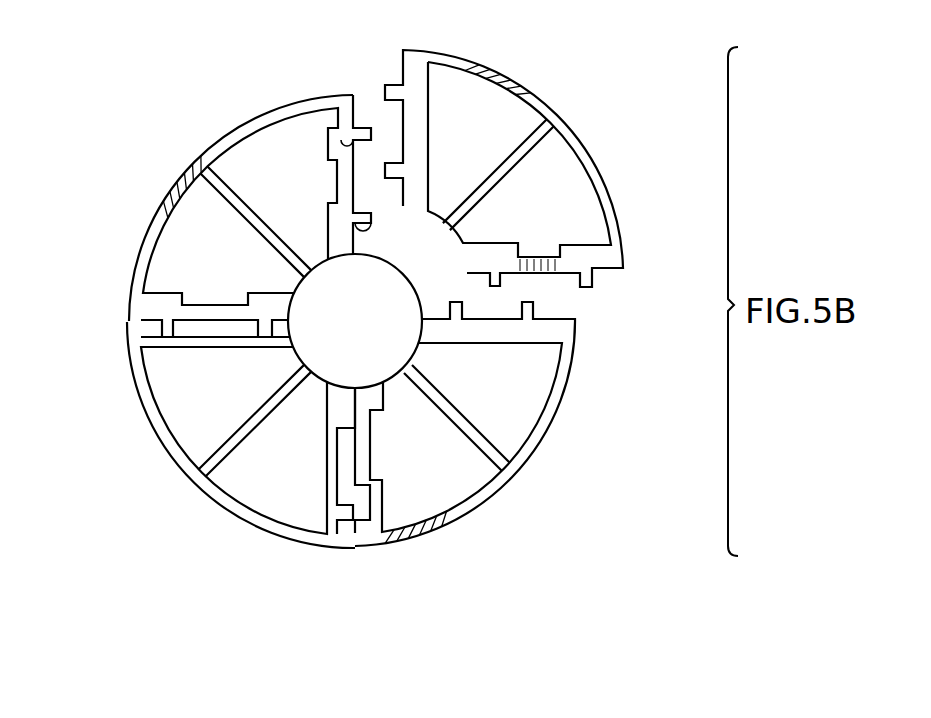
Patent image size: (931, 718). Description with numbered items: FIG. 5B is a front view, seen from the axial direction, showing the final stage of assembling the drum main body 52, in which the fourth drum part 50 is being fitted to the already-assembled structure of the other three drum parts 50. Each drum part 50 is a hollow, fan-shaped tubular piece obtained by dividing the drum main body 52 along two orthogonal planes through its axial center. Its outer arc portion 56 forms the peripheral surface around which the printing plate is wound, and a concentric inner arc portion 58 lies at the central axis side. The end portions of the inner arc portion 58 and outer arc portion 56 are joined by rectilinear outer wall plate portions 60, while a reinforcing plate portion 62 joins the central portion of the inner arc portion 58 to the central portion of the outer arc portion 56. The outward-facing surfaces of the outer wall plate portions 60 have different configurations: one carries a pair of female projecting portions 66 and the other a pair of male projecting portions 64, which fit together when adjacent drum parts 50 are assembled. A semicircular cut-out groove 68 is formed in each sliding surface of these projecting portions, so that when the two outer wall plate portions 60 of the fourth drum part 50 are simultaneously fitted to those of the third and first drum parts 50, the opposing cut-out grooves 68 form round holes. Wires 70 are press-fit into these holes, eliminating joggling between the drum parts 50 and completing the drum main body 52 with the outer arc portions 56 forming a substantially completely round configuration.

The drum part 50 is at (184, 150).
The drum main body 52 is at (676, 170).
The outer arc portion 56 is at (287, 106).
The inner arc portion 58 is at (446, 222).
The outer wall plate portion 60 is at (372, 148).
The reinforcing plate portion 62 is at (245, 191).
The male projecting portion 64 is at (394, 86).
The female projecting portion 66 is at (366, 121).
The cut-out groove 68 is at (430, 88).
The wire 70 is at (178, 316).